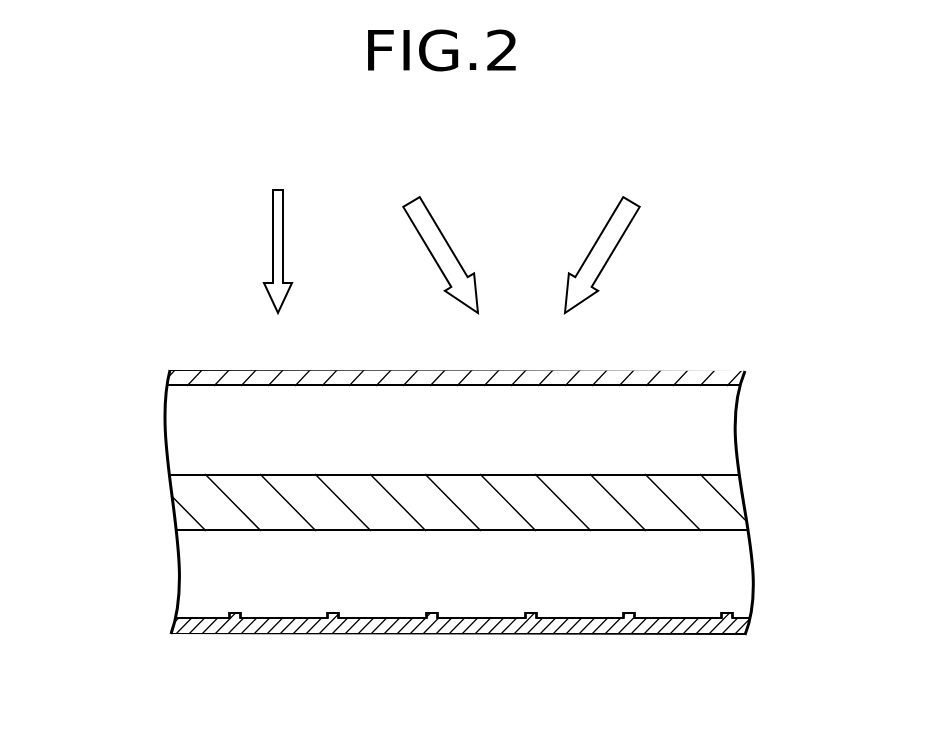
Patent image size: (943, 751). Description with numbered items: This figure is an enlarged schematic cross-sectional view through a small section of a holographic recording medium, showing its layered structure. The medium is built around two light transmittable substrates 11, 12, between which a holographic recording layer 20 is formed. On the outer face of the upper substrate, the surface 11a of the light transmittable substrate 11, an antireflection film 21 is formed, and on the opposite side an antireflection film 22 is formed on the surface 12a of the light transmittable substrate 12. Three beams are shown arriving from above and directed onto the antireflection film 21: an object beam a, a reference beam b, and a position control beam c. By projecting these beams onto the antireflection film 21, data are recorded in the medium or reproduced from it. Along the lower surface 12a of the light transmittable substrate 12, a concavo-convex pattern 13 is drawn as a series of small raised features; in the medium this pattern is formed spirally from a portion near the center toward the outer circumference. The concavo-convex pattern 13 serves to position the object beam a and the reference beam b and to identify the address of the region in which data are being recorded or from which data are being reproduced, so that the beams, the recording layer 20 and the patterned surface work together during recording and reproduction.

The light transmittable substrate 11 is at (722, 430).
The surface of light transmittable substrate 11a is at (217, 385).
The light transmittable substrate 12 is at (740, 588).
The surface of light transmittable substrate 12a is at (212, 618).
The concavo-convex pattern 13 is at (333, 613).
The holographic recording layer 20 is at (740, 510).
The antireflection film 21 is at (227, 370).
The antireflection film 22 is at (292, 634).
The object beam a is at (428, 253).
The reference beam b is at (613, 253).
The position control beam c is at (273, 262).